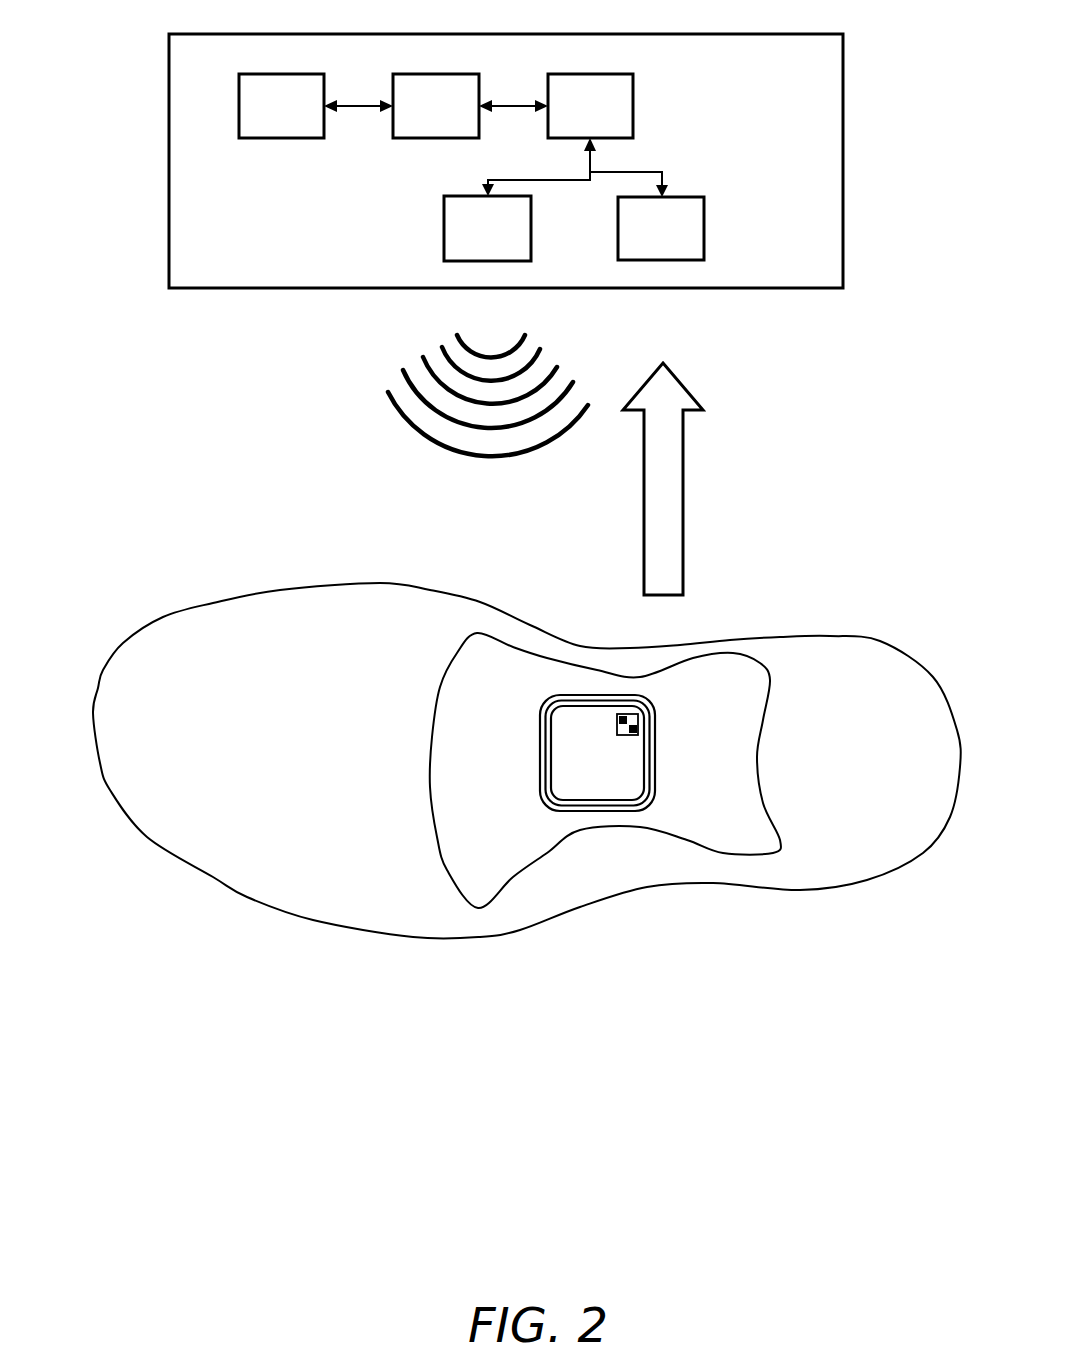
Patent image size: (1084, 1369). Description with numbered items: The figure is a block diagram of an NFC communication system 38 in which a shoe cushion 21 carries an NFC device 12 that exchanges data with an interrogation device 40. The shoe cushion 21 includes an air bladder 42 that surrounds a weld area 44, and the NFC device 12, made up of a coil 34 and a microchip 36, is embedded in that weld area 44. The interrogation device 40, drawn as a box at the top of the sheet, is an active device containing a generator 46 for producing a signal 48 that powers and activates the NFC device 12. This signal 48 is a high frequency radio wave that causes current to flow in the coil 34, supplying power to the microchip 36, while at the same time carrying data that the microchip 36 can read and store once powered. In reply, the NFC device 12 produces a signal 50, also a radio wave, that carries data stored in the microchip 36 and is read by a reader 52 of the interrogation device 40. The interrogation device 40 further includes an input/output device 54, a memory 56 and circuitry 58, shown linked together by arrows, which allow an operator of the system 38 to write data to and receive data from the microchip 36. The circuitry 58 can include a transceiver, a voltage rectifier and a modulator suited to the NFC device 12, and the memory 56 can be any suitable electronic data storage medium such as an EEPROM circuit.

The NFC device 12 is at (555, 835).
The shoe cushion 21 is at (361, 898).
The coil 34 is at (618, 803).
The microchip 36 is at (640, 712).
The NFC communication system 38 is at (168, 396).
The interrogation device 40 is at (730, 63).
The air bladder 42 is at (638, 648).
The weld area 44 is at (730, 825).
The generator 46 is at (442, 206).
The signal 48 is at (358, 388).
The signal 50 is at (716, 425).
The reader 52 is at (616, 206).
The input/output device 54 is at (266, 74).
The memory 56 is at (425, 74).
The circuitry 58 is at (580, 74).